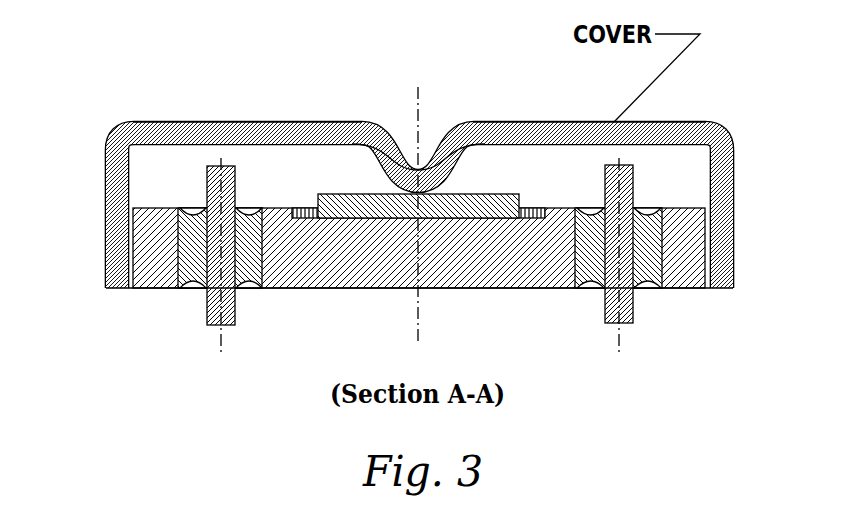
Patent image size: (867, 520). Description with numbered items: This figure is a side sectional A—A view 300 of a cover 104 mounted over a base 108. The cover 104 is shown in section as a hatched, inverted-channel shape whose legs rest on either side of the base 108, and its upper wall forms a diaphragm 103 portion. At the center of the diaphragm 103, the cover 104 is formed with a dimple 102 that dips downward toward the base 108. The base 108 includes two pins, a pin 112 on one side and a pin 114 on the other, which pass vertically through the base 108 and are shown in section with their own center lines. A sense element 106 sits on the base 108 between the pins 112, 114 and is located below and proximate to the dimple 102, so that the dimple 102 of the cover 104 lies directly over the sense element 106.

The side sectional A—A view 300 is at (714, 90).
The dimple 102 is at (412, 165).
The diaphragm 103 is at (573, 123).
The cover 104 is at (108, 142).
The sense element 106 is at (338, 196).
The base 108 is at (352, 288).
The pin 112 is at (207, 310).
The pin 114 is at (634, 310).